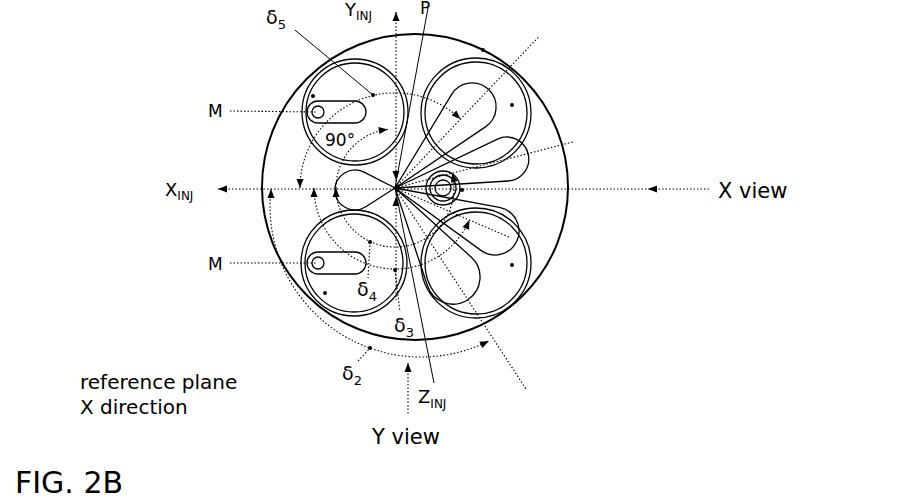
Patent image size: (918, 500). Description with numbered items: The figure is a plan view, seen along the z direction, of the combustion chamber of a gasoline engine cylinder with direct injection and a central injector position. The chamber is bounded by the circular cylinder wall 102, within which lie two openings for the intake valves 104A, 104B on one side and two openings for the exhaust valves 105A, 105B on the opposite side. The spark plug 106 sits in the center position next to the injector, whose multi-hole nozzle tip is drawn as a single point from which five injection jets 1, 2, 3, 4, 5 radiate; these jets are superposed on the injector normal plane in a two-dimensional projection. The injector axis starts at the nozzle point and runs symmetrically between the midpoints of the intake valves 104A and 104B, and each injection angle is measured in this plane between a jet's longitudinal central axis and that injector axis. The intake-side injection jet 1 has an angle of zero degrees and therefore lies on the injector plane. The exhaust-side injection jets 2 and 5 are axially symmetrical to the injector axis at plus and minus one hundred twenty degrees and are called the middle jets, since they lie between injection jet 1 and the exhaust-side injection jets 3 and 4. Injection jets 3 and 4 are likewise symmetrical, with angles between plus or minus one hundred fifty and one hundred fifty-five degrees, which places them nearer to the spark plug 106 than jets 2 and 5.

The cylinder wall 102 is at (483, 50).
The intake valve 104A is at (313, 96).
The intake valve 104B is at (325, 293).
The exhaust valve 105A is at (512, 105).
The exhaust valve 105B is at (512, 265).
The spark plug 106 is at (462, 190).
The injection jet 1 is at (365, 191).
The injection jet 2 is at (437, 246).
The injection jet 3 is at (457, 221).
The injection jet 4 is at (462, 162).
The injection jet 5 is at (445, 135).